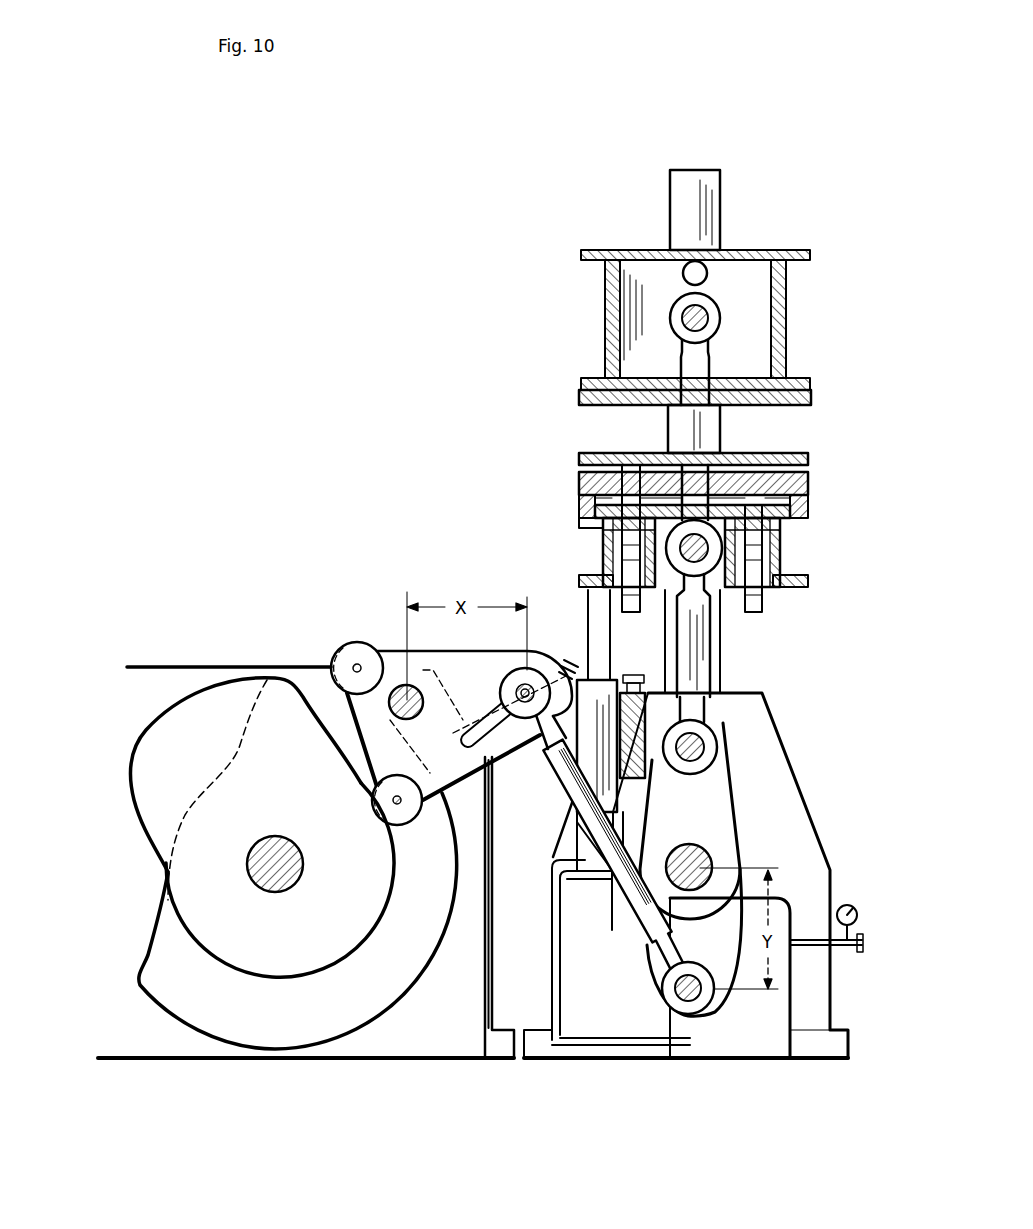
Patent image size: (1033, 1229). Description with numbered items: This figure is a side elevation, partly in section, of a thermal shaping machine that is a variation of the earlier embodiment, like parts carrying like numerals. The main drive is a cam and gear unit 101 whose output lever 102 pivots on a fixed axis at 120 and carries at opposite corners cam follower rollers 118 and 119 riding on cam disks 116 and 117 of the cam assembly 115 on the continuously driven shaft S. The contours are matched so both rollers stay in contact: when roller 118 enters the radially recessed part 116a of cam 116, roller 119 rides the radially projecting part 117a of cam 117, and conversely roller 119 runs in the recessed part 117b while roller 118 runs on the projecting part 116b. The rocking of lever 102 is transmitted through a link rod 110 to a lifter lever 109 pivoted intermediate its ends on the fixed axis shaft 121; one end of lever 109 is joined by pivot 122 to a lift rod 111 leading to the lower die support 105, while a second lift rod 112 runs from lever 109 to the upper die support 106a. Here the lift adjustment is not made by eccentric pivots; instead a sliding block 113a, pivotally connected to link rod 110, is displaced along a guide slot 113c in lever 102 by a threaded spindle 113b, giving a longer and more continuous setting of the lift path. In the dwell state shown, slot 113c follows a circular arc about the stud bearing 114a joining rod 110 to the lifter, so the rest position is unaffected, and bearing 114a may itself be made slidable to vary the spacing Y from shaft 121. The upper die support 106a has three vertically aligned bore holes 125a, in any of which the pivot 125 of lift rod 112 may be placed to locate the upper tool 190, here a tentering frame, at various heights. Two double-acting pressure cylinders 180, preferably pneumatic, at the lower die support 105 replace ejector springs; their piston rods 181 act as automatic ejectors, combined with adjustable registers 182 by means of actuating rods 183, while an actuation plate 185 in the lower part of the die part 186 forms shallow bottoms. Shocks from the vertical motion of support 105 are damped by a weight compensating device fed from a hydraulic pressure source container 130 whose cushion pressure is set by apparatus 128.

The cam and gear unit 101 is at (203, 665).
The output lever 102 is at (393, 677).
The lower die support 105 is at (585, 522).
The upper die support 106a is at (753, 265).
The lifter lever 109 is at (760, 852).
The link rod 110 is at (618, 888).
The lift rod 111 is at (690, 641).
The second lift rod 112 is at (694, 424).
The sliding block 113a is at (522, 690).
The threaded spindle 113b is at (556, 660).
The guide slot 113c is at (490, 723).
The stud bearing 114a is at (687, 1001).
The cam assembly 115 is at (180, 686).
The cam disk 116 is at (290, 1020).
The radially recessed part 116a is at (145, 952).
The radially projecting part 116b is at (205, 690).
The cam disk 117 is at (195, 870).
The radially projecting part 117a is at (278, 703).
The radially recessed part 117b is at (228, 755).
The cam follower roller 118 is at (348, 645).
The cam follower roller 119 is at (400, 826).
The fixed axis 120 is at (420, 717).
The fixed axis shaft 121 is at (700, 862).
The pivot 122 is at (697, 749).
The pivot 125 is at (690, 308).
The bore holes 125a is at (705, 270).
The pressure setting apparatus 128 is at (853, 960).
The hydraulic pressure source container 130 is at (762, 1043).
The pressure cylinders 180 is at (783, 549).
The piston rods 181 is at (757, 609).
The adjustable registers 182 is at (639, 668).
The actuating rods 183 is at (580, 458).
The actuation plate 185 is at (594, 508).
The die part 186 is at (597, 478).
The upper tool 190 is at (580, 395).
The shaft S is at (286, 851).